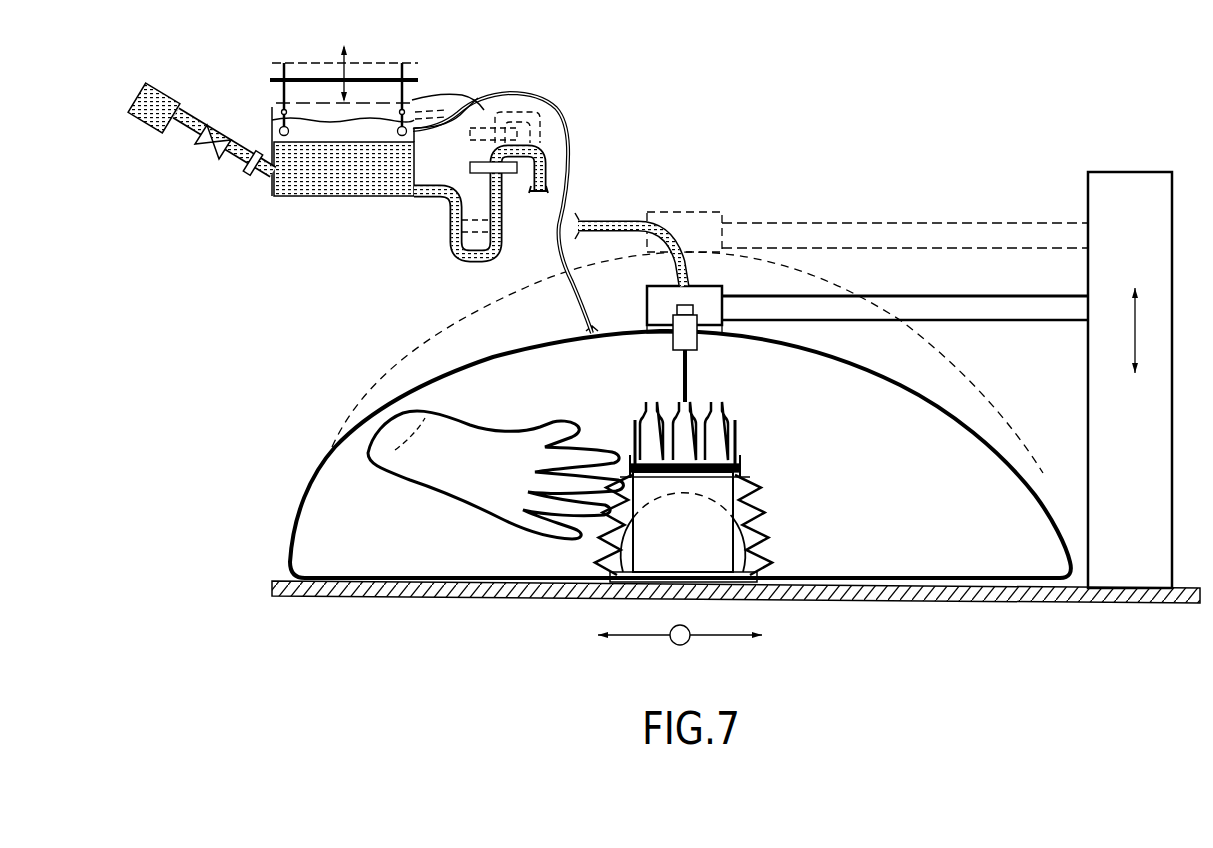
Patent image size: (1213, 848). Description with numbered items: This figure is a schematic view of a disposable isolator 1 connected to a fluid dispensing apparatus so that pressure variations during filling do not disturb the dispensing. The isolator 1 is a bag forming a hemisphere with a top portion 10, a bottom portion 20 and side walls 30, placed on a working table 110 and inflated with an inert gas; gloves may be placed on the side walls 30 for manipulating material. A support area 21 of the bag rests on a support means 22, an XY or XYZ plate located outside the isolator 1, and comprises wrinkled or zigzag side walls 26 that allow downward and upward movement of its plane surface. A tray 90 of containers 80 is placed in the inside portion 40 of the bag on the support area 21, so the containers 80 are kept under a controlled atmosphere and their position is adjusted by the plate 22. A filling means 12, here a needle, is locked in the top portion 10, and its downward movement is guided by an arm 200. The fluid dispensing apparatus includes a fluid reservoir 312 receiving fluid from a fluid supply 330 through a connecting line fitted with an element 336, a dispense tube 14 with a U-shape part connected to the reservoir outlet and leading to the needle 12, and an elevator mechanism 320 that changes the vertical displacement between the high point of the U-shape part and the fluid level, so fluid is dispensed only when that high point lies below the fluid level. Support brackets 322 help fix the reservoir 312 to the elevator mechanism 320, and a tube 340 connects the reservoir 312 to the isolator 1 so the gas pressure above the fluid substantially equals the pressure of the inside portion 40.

The disposable isolator 1 is at (322, 316).
The top portion 10 is at (553, 318).
The filling means 12 is at (655, 302).
The dispense tube 14 is at (630, 224).
The bottom portion 20 is at (310, 523).
The support area 21 is at (794, 554).
The support means 22 is at (672, 542).
The zigzag side walls 26 is at (772, 513).
The side walls 30 is at (425, 357).
The inside portion 40 is at (791, 424).
The container 80 is at (678, 425).
The tray 90 is at (735, 437).
The working table 110 is at (508, 440).
The arm 200 is at (962, 250).
The fluid reservoir 312 is at (274, 143).
The elevator mechanism 320 is at (418, 80).
The support brackets 322 is at (445, 100).
The fluid supply 330 is at (143, 97).
The valve 336 is at (204, 144).
The tube 340 is at (548, 102).